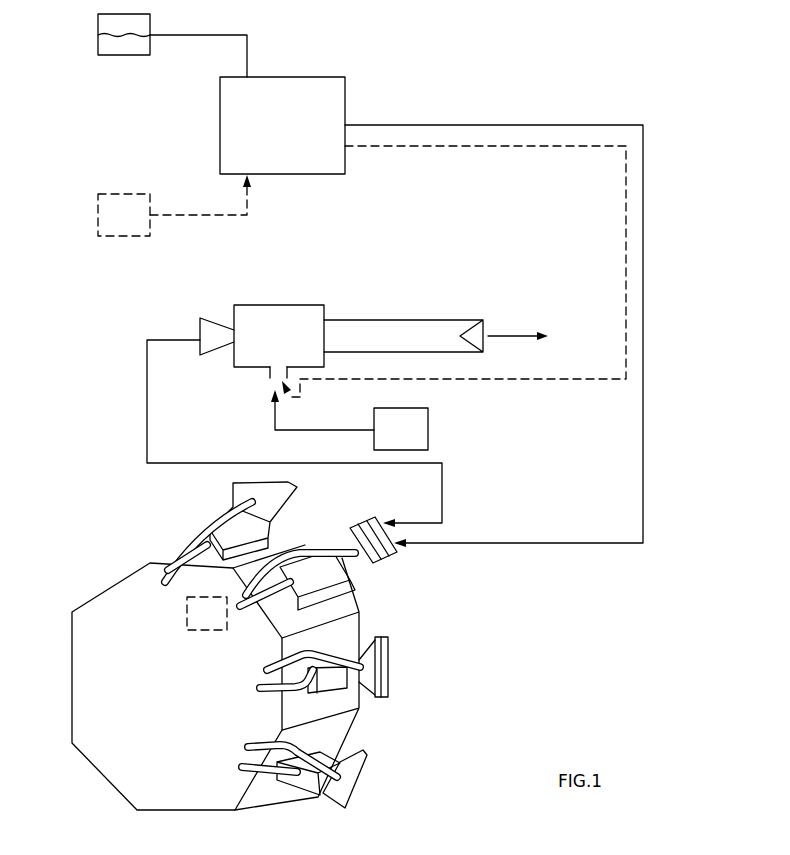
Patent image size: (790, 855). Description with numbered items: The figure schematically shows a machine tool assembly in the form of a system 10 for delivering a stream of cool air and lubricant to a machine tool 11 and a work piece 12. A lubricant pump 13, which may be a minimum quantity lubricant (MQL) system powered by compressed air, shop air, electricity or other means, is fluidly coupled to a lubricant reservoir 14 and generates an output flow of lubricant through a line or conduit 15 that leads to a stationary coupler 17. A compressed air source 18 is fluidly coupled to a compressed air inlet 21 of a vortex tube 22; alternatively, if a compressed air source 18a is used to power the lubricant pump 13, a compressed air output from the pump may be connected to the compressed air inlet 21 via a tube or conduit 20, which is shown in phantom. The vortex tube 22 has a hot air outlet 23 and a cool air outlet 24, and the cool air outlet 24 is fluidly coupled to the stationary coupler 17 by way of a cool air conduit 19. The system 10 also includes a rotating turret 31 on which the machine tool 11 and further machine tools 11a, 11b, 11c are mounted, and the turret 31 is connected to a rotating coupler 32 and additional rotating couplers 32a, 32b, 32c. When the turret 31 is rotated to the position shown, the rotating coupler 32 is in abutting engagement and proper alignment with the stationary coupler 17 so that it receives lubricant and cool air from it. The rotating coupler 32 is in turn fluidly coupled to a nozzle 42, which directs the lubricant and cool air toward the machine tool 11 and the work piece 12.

The system 10 is at (592, 72).
The machine tool 11 is at (250, 620).
The machine tool 11a is at (169, 582).
The machine tool 11b is at (267, 692).
The machine tool 11c is at (246, 772).
The work piece 12 is at (187, 617).
The lubricant pump 13 is at (220, 126).
The lubricant reservoir 14 is at (125, 55).
The line or conduit 15 is at (643, 335).
The stationary coupler 17 is at (393, 558).
The compressed air source 18 is at (428, 430).
The compressed air source 18a is at (97, 213).
The cool air conduit 19 is at (147, 400).
The tube or conduit 20 is at (485, 147).
The compressed air inlet 21 is at (268, 375).
The vortex tube 22 is at (278, 305).
The hot air outlet 23 is at (472, 320).
The cool air outlet 24 is at (210, 318).
The rotating turret 31 is at (92, 786).
The rotating coupler 32 is at (387, 563).
The rotating coupler 32a is at (280, 508).
The rotating coupler 32b is at (388, 665).
The rotating coupler 32c is at (362, 787).
The nozzle 42 is at (328, 545).